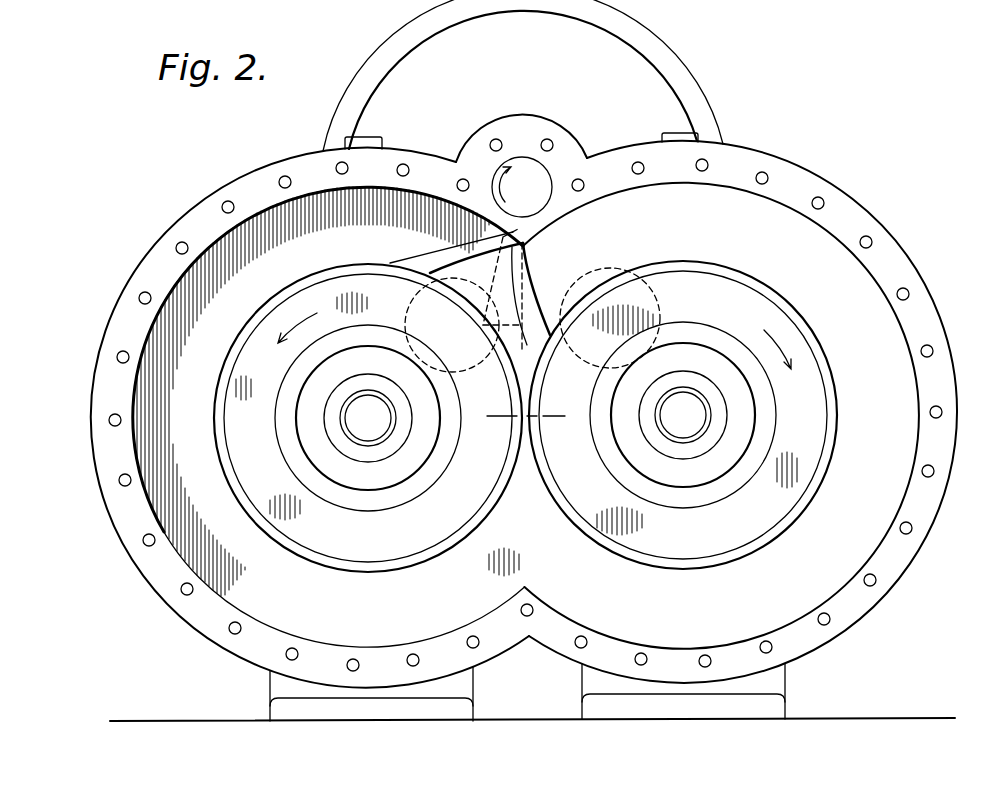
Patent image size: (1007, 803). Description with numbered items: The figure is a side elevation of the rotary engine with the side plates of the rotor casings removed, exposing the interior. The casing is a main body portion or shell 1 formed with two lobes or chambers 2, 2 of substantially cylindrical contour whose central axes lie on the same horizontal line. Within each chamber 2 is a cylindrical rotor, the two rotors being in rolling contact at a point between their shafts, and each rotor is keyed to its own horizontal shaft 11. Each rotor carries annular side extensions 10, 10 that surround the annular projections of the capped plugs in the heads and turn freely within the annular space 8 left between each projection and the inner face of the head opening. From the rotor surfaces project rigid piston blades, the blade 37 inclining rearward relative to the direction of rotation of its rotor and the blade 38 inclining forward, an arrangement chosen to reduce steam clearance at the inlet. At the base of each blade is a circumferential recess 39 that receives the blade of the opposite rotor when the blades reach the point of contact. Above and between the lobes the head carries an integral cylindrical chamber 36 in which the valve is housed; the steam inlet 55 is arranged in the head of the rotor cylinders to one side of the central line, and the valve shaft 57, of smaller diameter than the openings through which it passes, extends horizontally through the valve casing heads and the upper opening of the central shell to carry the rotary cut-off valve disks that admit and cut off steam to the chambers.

The main body portion or shell 1 is at (550, 632).
The lobes or chambers 2 is at (163, 487).
The annular space 8 is at (526, 417).
The annular side extensions 10 is at (300, 360).
The shaft 11 is at (525, 416).
The arch frame 36 is at (523, 75).
The blade 37 is at (457, 247).
The blade 38 is at (533, 297).
The circumferential recess 39 is at (641, 281).
The inlet 55 is at (497, 284).
The shaft 57 is at (538, 176).